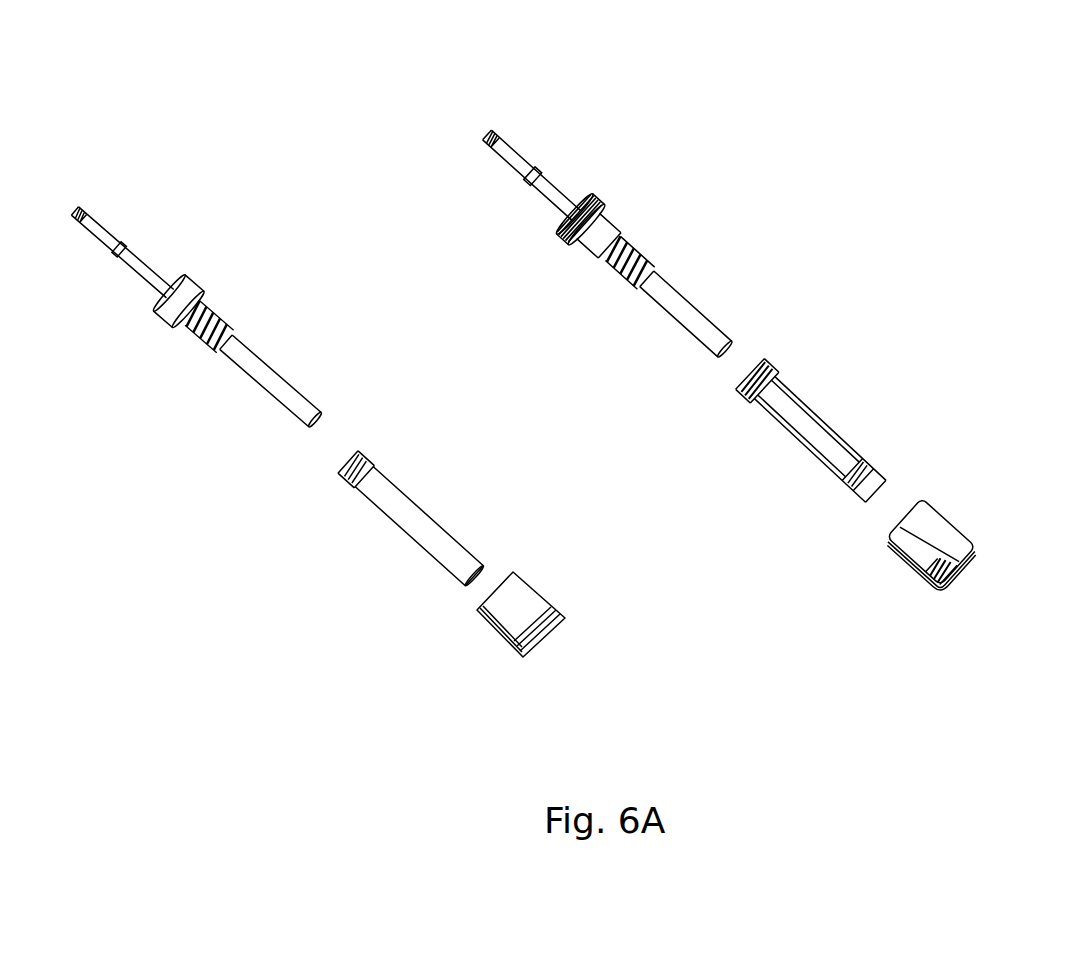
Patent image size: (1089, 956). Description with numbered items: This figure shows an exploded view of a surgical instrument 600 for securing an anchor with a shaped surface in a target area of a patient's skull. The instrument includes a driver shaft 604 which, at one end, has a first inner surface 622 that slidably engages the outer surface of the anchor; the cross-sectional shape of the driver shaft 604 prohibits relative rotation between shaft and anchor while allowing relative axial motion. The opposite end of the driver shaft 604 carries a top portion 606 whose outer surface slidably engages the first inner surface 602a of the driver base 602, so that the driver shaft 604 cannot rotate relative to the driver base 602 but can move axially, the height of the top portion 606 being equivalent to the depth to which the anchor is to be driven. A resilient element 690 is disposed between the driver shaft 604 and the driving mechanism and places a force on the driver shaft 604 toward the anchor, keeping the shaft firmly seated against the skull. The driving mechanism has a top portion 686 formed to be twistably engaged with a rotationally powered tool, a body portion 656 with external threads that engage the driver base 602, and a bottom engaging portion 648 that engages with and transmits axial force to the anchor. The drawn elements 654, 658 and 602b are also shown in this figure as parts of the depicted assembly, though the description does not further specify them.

The surgical instrument 600 is at (660, 84).
The top portion of the driving mechanism 686 is at (77, 187).
The probe tip shaft 654 is at (137, 258).
The body portion of the driving mechanism 656 is at (186, 298).
The resilient element 690 is at (228, 322).
The probe shaft 658 is at (244, 357).
The bottom engaging portion 648 is at (306, 436).
The top portion of the driver shaft 606 is at (358, 443).
The driver shaft 604 is at (395, 500).
The driver base 602 is at (523, 603).
The first inner surface of the driver shaft 622 is at (863, 457).
The first inner surface of the driver base 602a is at (962, 575).
The connector block second portion 602b is at (940, 504).